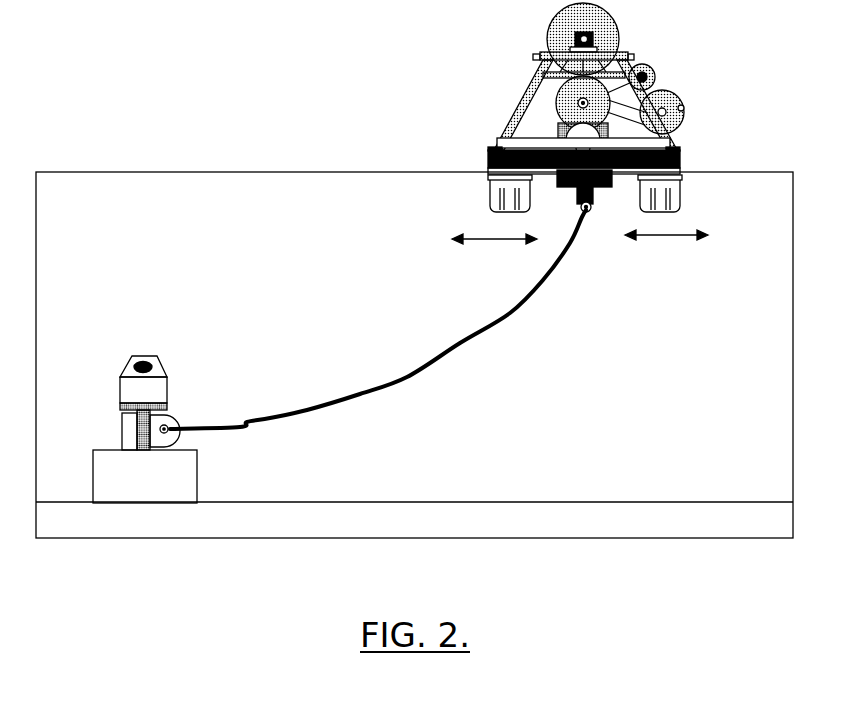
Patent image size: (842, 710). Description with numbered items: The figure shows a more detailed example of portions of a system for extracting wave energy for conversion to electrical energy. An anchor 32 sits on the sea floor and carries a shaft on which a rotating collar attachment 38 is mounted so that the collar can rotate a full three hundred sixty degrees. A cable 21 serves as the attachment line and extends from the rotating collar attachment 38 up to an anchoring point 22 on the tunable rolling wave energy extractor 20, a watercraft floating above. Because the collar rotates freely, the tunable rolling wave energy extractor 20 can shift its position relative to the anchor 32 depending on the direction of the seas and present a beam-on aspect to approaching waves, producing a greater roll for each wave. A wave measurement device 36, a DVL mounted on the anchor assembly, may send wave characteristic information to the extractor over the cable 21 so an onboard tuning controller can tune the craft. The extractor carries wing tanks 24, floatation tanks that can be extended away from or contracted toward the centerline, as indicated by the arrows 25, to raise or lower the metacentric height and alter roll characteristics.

The tunable rolling wave energy extractor 20 is at (569, 88).
The cable 21 is at (378, 319).
The anchoring point 22 is at (568, 198).
The wing tanks 24 is at (586, 204).
The arrows 25 is at (566, 248).
The anchor 32 is at (170, 476).
The wave measurement device 36 is at (167, 375).
The rotating collar attachment 38 is at (122, 427).